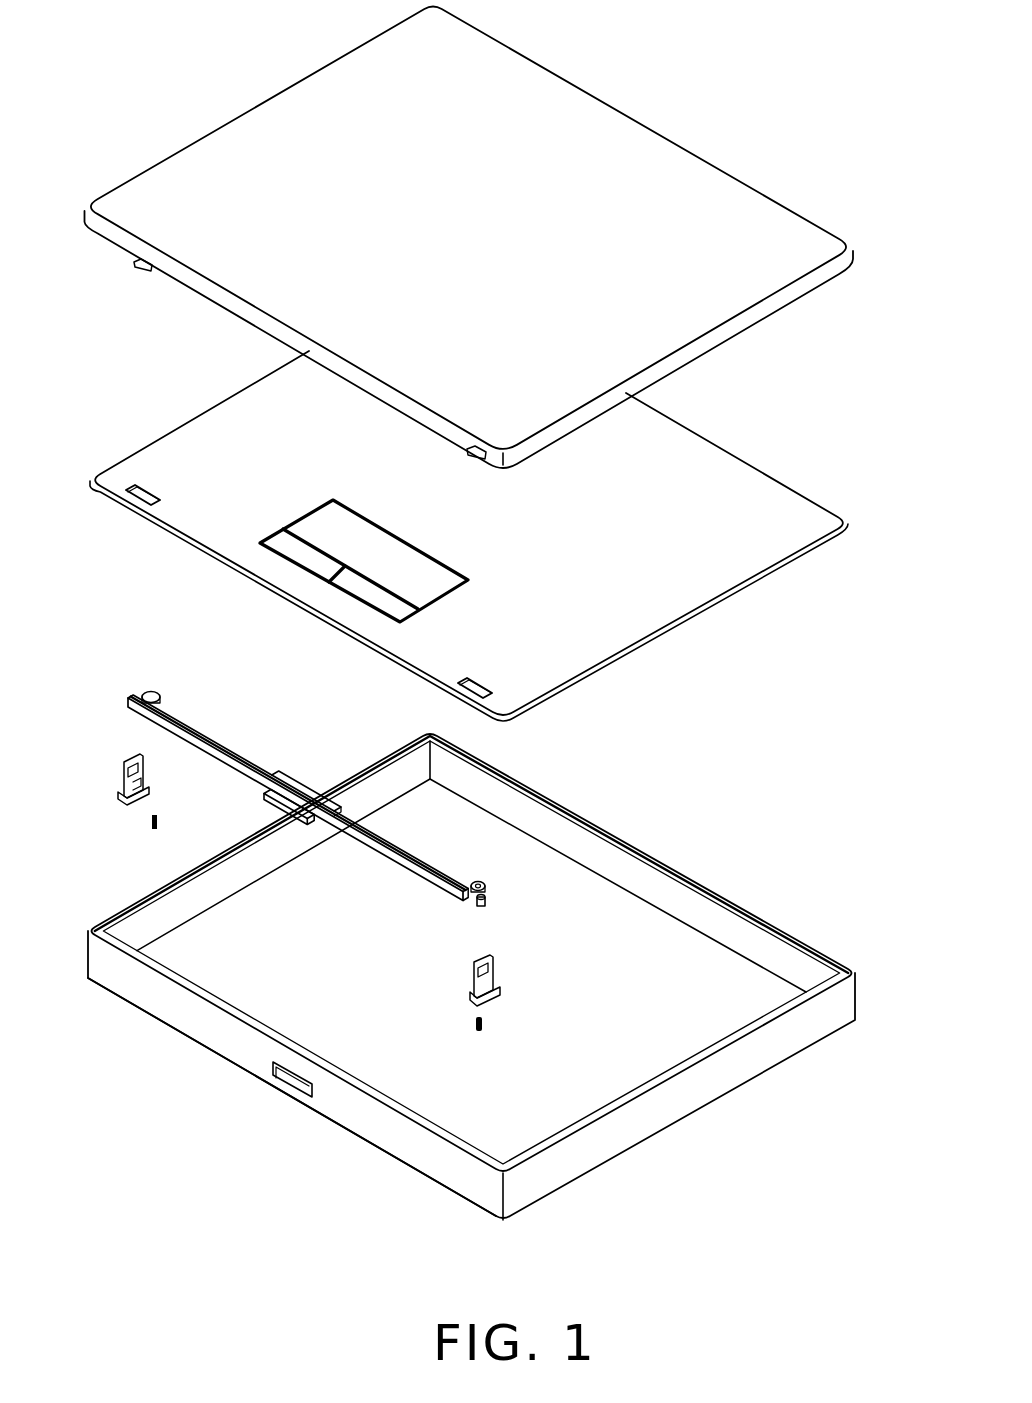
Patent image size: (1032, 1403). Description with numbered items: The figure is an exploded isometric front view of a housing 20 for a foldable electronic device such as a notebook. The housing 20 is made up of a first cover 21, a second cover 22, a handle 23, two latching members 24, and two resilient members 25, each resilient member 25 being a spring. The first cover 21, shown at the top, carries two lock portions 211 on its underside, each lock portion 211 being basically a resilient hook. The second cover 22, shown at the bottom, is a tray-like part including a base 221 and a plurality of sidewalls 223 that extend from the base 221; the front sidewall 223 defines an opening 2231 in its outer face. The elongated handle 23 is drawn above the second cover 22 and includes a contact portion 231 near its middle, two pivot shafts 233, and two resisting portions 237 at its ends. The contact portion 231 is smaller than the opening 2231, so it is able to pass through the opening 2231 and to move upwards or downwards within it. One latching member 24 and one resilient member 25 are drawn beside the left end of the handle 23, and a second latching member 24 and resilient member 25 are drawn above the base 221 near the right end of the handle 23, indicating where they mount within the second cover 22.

The housing 20 is at (661, 84).
The first cover 21 is at (705, 197).
The lock portion 211 is at (468, 449).
The second cover 22 is at (790, 896).
The base 221 is at (632, 947).
The sidewall 223 is at (388, 1136).
The opening 2231 is at (290, 1076).
The handle 23 is at (121, 688).
The contact portion 231 is at (266, 801).
The pivot shaft 233 is at (486, 902).
The resisting portion 237 is at (150, 695).
The latching member 24 is at (121, 768).
The resilient member 25 is at (148, 826).